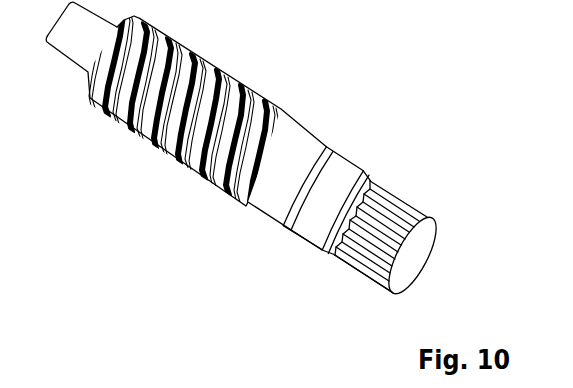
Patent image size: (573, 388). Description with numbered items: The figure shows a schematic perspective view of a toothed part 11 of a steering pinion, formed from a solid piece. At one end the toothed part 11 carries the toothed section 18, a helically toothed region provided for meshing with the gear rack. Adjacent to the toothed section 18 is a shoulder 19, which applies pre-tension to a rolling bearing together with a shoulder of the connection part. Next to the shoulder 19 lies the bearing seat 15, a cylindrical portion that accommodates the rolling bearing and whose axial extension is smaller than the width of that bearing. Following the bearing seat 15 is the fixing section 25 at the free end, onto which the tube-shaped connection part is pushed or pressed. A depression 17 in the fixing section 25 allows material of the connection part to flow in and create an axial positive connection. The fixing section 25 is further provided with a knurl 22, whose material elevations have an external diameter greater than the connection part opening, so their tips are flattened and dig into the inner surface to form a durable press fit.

The toothed part 11 is at (125, 148).
The toothed section 18 is at (167, 50).
The shoulder 19 is at (328, 147).
The bearing seat 15 is at (305, 224).
The depression 17 is at (323, 247).
The knurl 22 is at (361, 248).
The fixing section 25 is at (377, 165).